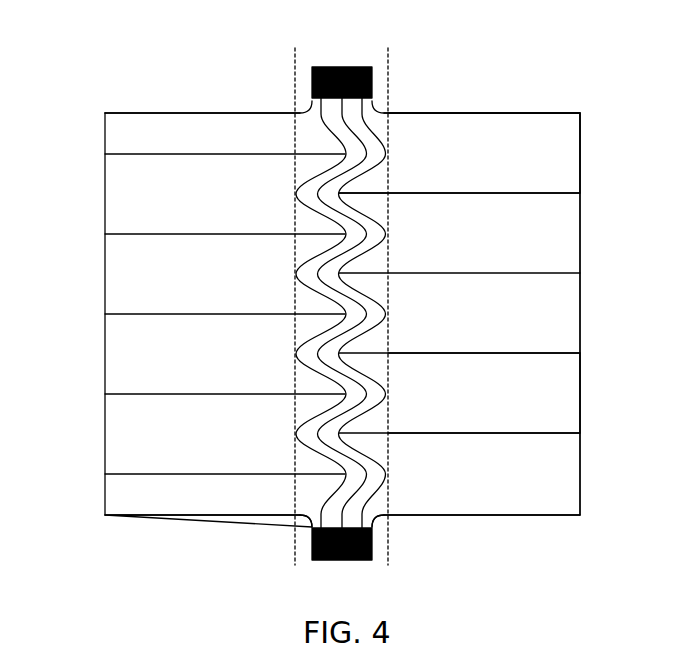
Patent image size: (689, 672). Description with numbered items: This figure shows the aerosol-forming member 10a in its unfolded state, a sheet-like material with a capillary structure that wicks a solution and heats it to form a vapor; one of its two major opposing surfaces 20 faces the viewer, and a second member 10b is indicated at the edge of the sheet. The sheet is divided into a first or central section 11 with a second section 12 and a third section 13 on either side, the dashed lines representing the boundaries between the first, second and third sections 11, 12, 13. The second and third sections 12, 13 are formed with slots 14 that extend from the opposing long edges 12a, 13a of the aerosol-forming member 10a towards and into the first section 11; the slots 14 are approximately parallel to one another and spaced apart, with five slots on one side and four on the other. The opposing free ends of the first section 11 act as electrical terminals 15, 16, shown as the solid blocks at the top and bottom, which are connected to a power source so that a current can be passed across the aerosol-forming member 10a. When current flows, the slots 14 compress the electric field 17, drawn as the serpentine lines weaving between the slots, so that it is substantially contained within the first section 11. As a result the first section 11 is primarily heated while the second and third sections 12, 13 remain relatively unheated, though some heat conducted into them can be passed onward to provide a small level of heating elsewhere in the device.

The aerosol-forming member 10a is at (430, 52).
The second main surface 10b is at (572, 662).
The first section 11 is at (300, 428).
The second section 12 is at (222, 280).
The long edge 12a is at (105, 192).
The third section 13 is at (490, 303).
The long edge 13a is at (580, 230).
The slots 14 is at (452, 192).
The electrical terminal 15 is at (343, 66).
The electrical terminal 16 is at (333, 560).
The electric field 17 is at (323, 508).
The major opposing surface 20 is at (557, 338).